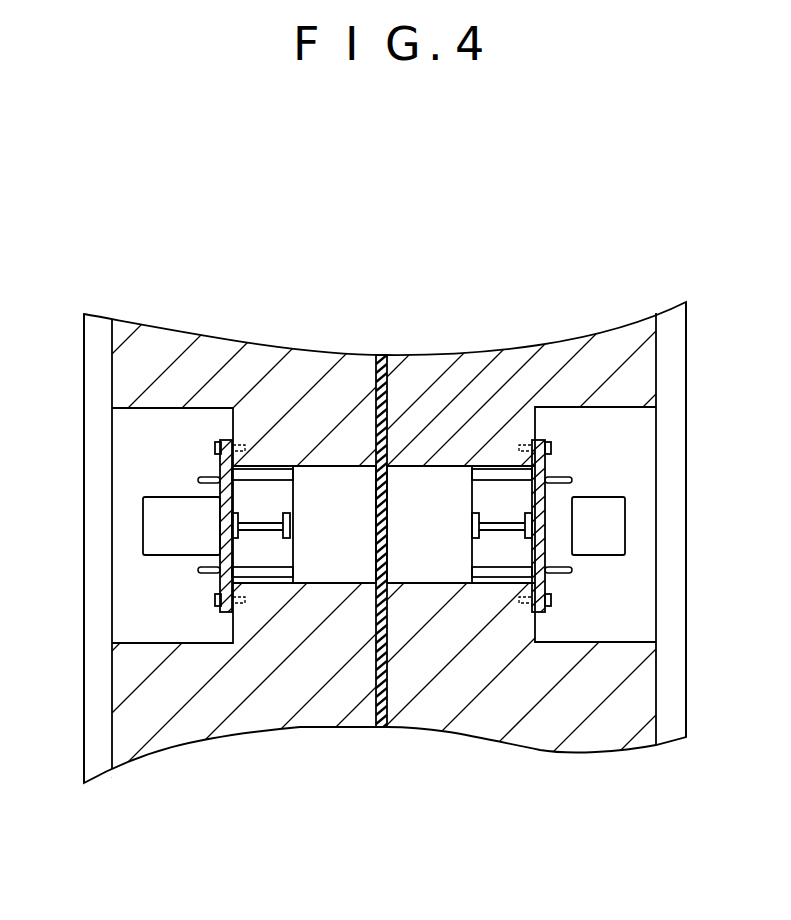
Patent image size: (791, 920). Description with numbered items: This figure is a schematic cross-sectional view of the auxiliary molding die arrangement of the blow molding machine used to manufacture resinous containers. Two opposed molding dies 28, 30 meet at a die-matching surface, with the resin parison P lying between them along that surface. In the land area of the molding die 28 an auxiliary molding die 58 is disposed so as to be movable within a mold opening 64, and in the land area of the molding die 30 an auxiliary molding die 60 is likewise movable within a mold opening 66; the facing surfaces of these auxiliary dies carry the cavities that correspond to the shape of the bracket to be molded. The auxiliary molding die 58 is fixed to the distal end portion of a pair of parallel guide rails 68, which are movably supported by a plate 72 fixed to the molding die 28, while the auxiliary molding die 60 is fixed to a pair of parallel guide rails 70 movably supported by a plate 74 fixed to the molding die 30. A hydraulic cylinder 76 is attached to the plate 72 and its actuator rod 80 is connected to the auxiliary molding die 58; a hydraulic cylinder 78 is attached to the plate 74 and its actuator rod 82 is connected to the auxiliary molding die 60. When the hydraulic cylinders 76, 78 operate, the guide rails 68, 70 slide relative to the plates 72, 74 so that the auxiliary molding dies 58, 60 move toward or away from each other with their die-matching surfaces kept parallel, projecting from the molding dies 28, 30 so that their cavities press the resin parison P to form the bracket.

The molding die 28 is at (168, 322).
The molding die 30 is at (575, 337).
The auxiliary molding die 58 is at (327, 468).
The auxiliary molding die 60 is at (423, 468).
The mold opening 64 is at (328, 570).
The mold opening 66 is at (430, 570).
The guide rails 68 is at (258, 466).
The guide rails 70 is at (485, 469).
The plate 72 is at (218, 583).
The plate 74 is at (548, 595).
The hydraulic cylinder 76 is at (143, 520).
The hydraulic cylinder 78 is at (625, 520).
The actuator rod 80 is at (265, 520).
The actuator rod 82 is at (497, 520).
The resin parison P is at (382, 355).